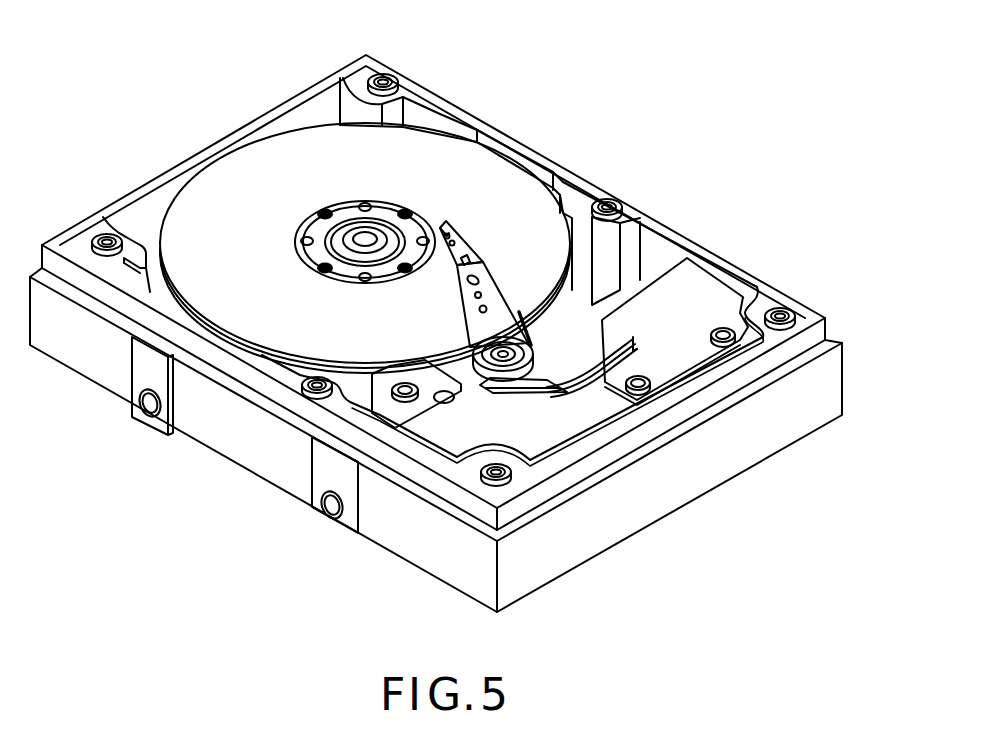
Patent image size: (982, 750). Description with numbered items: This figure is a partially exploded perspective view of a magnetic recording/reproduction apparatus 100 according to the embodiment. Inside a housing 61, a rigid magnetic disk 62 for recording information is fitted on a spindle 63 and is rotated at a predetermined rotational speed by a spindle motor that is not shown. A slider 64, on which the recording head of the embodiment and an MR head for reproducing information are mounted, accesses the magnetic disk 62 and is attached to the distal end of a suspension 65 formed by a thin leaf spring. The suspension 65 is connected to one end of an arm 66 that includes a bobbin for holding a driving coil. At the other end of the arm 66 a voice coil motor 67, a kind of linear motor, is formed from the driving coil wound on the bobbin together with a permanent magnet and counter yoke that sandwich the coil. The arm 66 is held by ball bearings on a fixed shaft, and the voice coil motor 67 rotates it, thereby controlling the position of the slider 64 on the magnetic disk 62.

The magnetic recording/reproduction apparatus 100 is at (581, 79).
The housing 61 is at (732, 450).
The magnetic disk 62 is at (433, 162).
The spindle 63 is at (302, 224).
The slider 64 is at (456, 231).
The suspension 65 is at (487, 292).
The arm 66 is at (490, 377).
The voice coil motor 67 is at (527, 390).